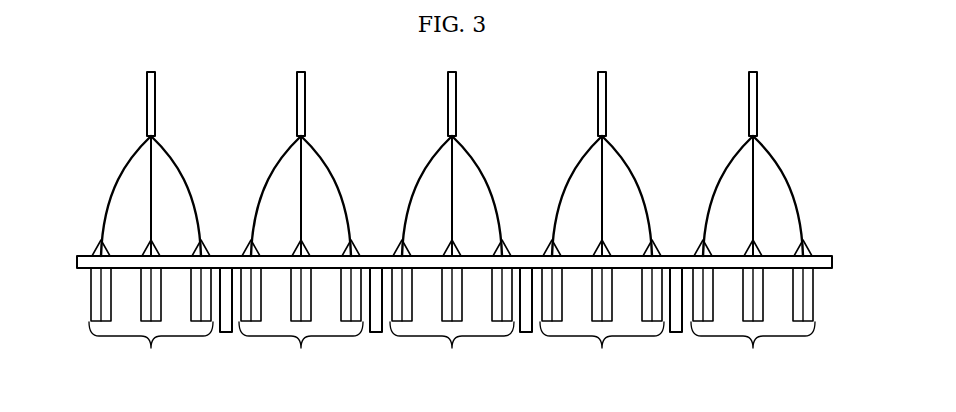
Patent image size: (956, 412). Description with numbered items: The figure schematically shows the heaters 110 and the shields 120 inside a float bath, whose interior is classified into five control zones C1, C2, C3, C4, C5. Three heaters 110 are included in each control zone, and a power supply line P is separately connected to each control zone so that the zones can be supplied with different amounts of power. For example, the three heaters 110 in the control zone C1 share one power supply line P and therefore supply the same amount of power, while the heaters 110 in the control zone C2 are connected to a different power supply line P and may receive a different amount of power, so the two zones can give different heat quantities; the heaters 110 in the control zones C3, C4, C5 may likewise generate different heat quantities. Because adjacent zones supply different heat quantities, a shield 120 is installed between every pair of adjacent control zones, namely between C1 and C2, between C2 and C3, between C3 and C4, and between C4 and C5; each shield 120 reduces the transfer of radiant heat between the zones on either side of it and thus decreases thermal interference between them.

The heater 110 is at (90, 290).
The shield 120 is at (227, 334).
The power supply line P is at (156, 95).
The control zone C1 is at (151, 351).
The control zone C2 is at (301, 351).
The control zone C3 is at (452, 351).
The control zone C4 is at (602, 351).
The control zone C5 is at (753, 351).